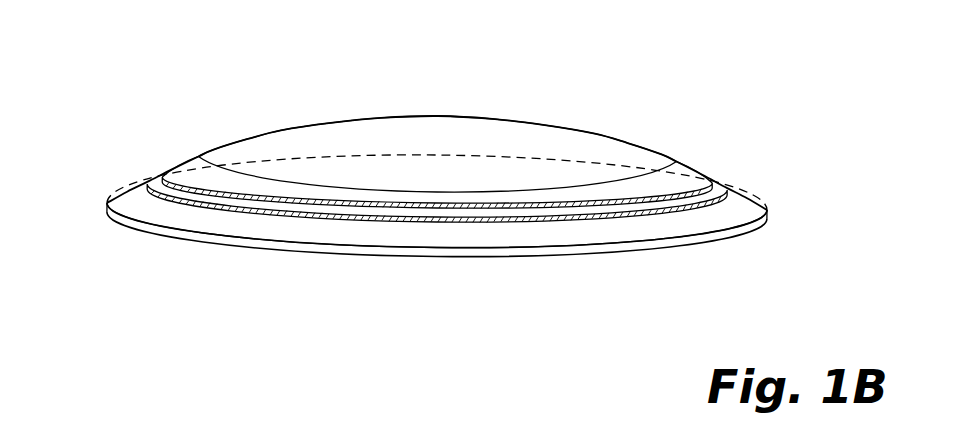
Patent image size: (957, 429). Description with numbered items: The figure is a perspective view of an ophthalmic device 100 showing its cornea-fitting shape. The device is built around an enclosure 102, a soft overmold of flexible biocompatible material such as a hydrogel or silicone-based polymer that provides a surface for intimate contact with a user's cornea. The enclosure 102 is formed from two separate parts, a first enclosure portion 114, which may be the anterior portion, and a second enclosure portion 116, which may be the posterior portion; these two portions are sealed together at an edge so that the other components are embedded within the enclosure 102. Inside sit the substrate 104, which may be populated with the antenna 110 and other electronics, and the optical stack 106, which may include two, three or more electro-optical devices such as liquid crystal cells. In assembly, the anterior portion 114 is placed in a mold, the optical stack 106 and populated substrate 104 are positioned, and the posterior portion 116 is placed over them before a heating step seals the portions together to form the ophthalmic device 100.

The ophthalmic device 100 is at (203, 121).
The enclosure 102 is at (106, 221).
The substrate 104 is at (153, 181).
The optical stack 106 is at (506, 121).
The antenna 110 is at (717, 181).
The first enclosure portion 114 is at (565, 240).
The second enclosure portion 116 is at (709, 250).